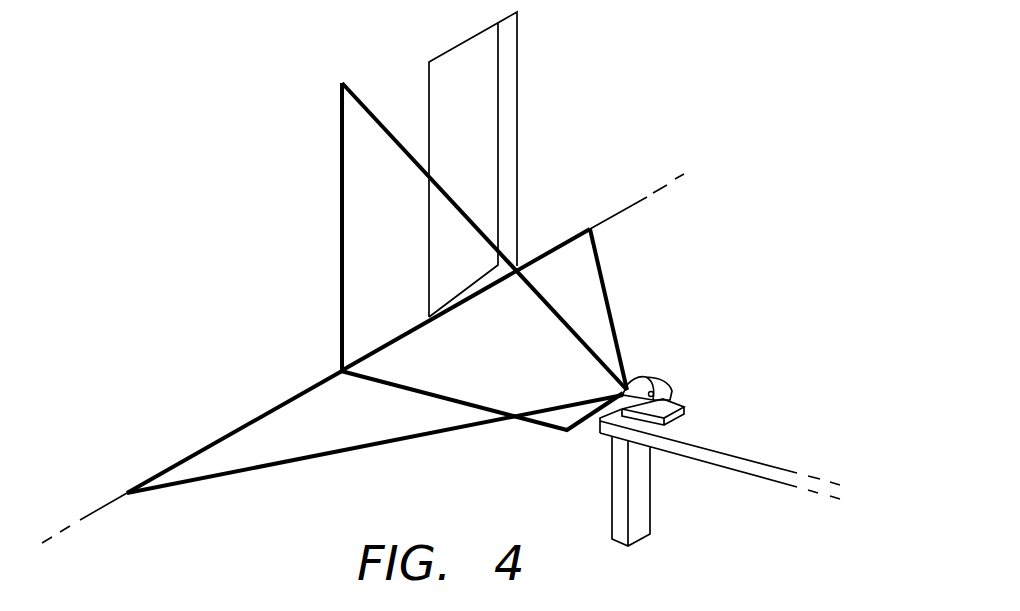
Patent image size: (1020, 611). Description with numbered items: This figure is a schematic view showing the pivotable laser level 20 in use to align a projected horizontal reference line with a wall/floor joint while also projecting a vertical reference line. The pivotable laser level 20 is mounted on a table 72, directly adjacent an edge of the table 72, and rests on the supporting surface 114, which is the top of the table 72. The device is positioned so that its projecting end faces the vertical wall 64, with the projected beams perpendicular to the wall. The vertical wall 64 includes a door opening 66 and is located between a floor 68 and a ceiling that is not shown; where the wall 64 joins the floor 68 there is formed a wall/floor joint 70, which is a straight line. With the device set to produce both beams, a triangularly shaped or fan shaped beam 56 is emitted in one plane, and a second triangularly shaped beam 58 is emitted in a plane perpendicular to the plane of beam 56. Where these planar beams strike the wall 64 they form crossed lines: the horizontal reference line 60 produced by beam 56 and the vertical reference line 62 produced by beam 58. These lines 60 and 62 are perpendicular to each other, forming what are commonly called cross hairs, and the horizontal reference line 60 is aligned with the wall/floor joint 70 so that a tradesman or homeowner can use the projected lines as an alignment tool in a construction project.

The pivotable laser level 20 is at (690, 384).
The fan shaped beam 56 is at (617, 274).
The triangularly shaped beam 58 is at (328, 131).
The horizontal reference line 60 is at (200, 450).
The vertical reference line 62 is at (341, 194).
The vertical wall 64 is at (277, 343).
The door opening 66 is at (508, 101).
The floor 68 is at (524, 472).
The wall/floor joint 70 is at (98, 508).
The table 72 is at (700, 450).
The supporting surface 114 is at (760, 432).